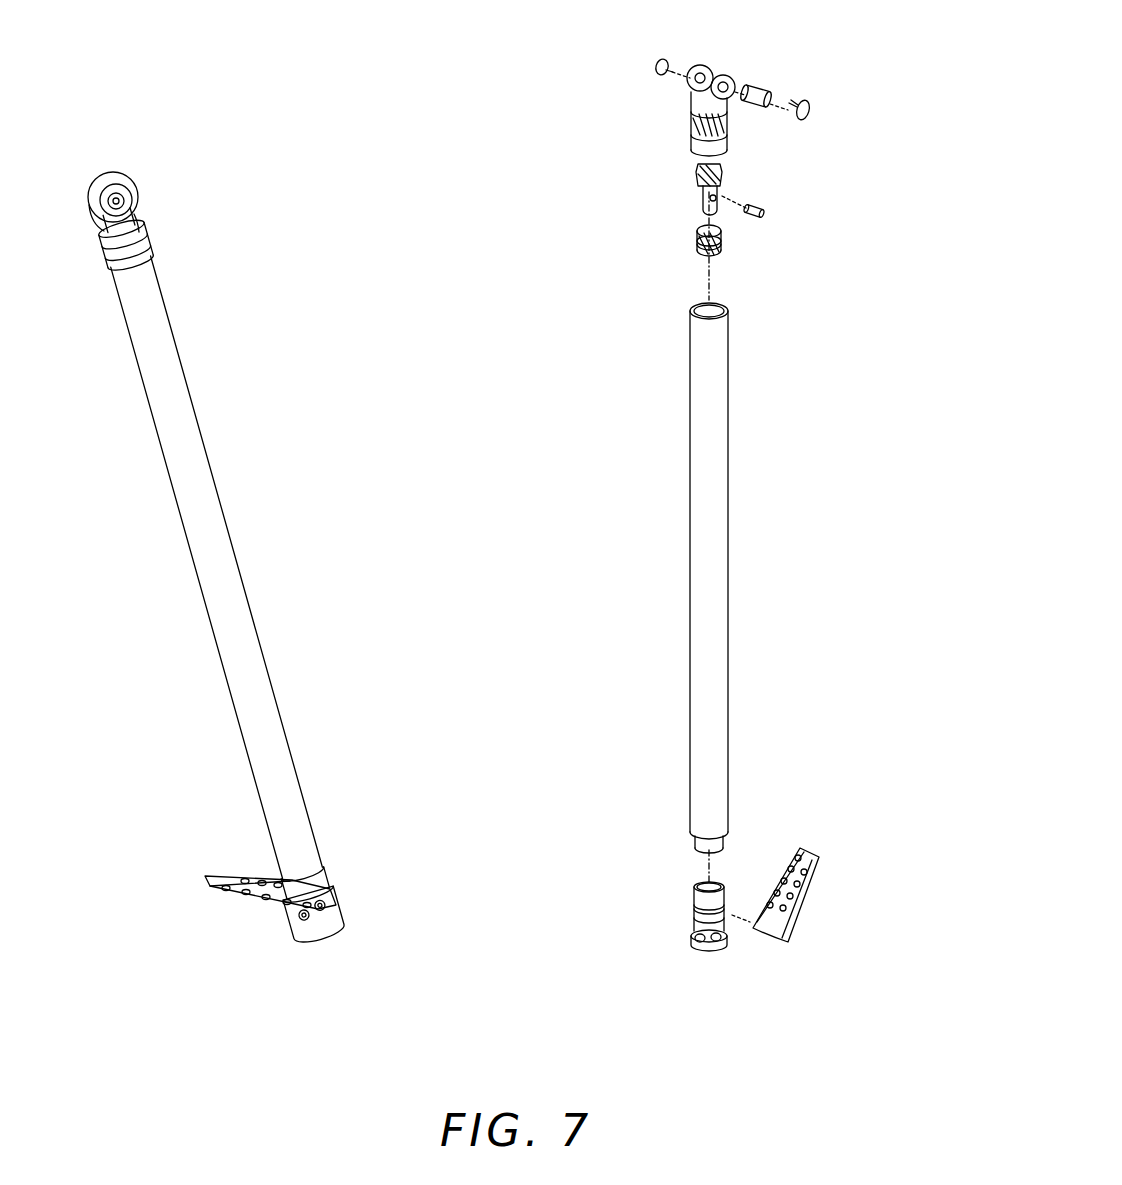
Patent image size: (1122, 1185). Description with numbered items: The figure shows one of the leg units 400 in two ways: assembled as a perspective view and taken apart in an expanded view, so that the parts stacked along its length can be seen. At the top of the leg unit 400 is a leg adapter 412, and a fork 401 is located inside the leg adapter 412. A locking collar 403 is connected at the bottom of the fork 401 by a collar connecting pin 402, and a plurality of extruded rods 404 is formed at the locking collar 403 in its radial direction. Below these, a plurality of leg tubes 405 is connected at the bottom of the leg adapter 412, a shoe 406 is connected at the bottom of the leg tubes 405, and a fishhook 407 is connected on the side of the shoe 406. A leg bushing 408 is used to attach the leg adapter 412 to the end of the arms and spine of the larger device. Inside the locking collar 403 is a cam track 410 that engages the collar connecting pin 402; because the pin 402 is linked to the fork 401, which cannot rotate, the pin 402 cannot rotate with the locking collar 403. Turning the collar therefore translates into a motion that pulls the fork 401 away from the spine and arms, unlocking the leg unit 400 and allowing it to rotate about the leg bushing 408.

The leg units 400 is at (197, 279).
The fork 401 is at (700, 172).
The collar connecting pin 402 is at (758, 213).
The locking collar 403 is at (700, 229).
The extruded rods 404 is at (703, 245).
The leg tubes 405 is at (690, 510).
The shoe 406 is at (697, 931).
The fishhook 407 is at (805, 857).
The leg bushing 408 is at (767, 93).
The cam track 410 is at (720, 246).
The leg adapter 412 is at (700, 113).